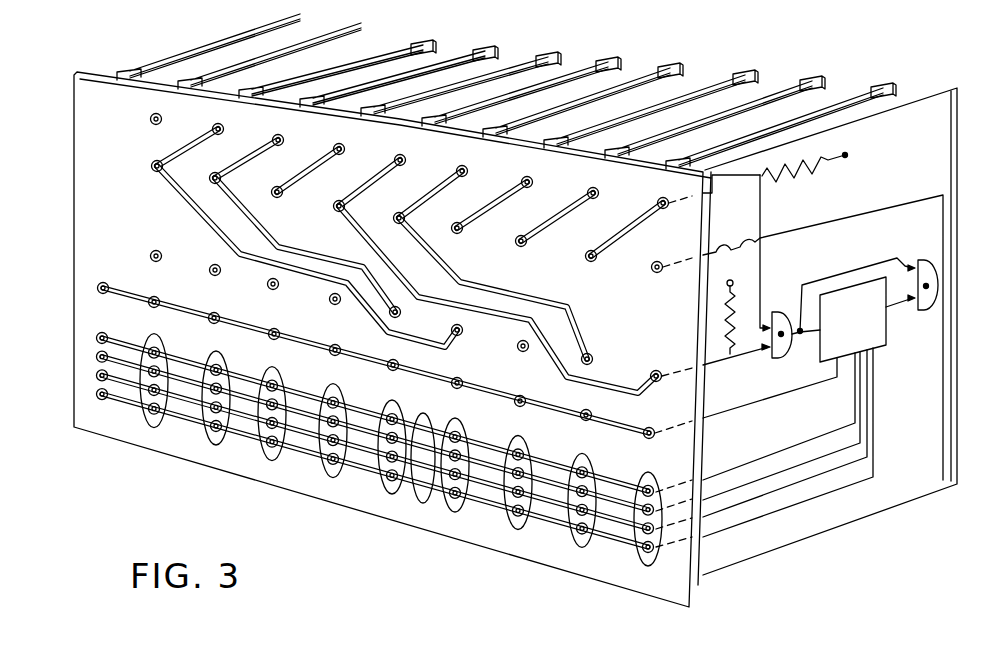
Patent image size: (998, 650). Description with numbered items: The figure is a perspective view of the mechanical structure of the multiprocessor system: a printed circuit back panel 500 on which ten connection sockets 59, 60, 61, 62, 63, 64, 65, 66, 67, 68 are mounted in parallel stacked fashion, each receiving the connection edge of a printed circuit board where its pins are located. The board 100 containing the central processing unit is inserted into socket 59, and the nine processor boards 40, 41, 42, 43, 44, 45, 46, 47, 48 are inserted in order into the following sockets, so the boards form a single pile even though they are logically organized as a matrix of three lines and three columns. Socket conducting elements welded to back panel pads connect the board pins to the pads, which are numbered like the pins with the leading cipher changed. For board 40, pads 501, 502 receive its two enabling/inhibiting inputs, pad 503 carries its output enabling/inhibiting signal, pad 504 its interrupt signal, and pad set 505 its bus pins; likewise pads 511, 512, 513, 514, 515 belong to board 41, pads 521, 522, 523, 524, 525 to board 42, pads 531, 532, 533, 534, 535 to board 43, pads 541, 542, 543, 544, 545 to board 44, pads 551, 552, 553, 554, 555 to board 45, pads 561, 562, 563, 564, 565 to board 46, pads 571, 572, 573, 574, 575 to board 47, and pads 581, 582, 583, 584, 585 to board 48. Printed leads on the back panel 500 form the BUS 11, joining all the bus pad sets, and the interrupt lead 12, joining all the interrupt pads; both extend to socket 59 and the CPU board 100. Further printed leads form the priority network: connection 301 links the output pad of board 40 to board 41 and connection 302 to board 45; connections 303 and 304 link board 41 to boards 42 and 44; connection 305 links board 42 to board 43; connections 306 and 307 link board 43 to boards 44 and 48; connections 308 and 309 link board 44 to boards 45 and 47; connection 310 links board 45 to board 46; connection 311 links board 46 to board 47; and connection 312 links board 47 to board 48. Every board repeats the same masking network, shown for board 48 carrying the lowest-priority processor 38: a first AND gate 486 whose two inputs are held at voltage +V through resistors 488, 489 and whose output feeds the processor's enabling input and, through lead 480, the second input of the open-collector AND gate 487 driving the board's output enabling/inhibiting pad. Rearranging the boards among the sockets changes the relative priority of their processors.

The BUS leads 11 is at (420, 503).
The interrupt lead 12 is at (370, 363).
The processor 38 is at (885, 348).
The board 40 is at (420, 40).
The board 41 is at (491, 46).
The board 42 is at (551, 53).
The board 43 is at (614, 58).
The board 44 is at (676, 64).
The board 45 is at (750, 71).
The board 46 is at (816, 78).
The board 47 is at (886, 84).
The board 48 is at (946, 90).
The connection socket 59 is at (122, 72).
The connection socket 60 is at (180, 80).
The connection socket 61 is at (243, 88).
The connection socket 62 is at (302, 98).
The connection socket 63 is at (360, 108).
The connection socket 64 is at (424, 120).
The connection socket 65 is at (485, 130).
The connection socket 66 is at (546, 141).
The connection socket 67 is at (607, 152).
The connection socket 68 is at (684, 140).
The CPU board 100 is at (203, 66).
The connection 301 is at (190, 147).
The connection 302 is at (186, 204).
The connection 303 is at (250, 158).
The connection 304 is at (247, 212).
The connection 305 is at (302, 166).
The connection 306 is at (352, 193).
The connection 307 is at (360, 233).
The connection 308 is at (433, 195).
The connection 309 is at (432, 252).
The connection 310 is at (492, 205).
The connection 311 is at (547, 222).
The connection 312 is at (618, 236).
The lead 480 is at (873, 265).
The first AND gate 486 is at (777, 360).
The second AND gate 487 is at (923, 312).
The resistor 488 is at (732, 292).
The resistor 489 is at (808, 172).
The back panel 500 is at (181, 458).
The pad 501 is at (152, 252).
The pad 502 is at (152, 114).
The pad 503 is at (151, 165).
The pad 504 is at (150, 296).
The pad set 505 is at (151, 345).
The pad 511 is at (211, 265).
The pad 512 is at (214, 124).
The pad 513 is at (209, 178).
The pad 514 is at (213, 312).
The pad set 515 is at (215, 362).
The pad 521 is at (267, 285).
The pad 522 is at (274, 135).
The pad 523 is at (271, 193).
The pad 524 is at (273, 328).
The pad set 525 is at (271, 379).
The pad 531 is at (329, 299).
The pad 532 is at (334, 144).
The pad 533 is at (333, 208).
The pad 534 is at (333, 344).
The pad set 535 is at (333, 396).
The pad 541 is at (402, 312).
The pad 542 is at (396, 155).
The pad 543 is at (393, 218).
The pad 544 is at (391, 359).
The pad set 545 is at (392, 412).
The pad 551 is at (457, 336).
The pad 552 is at (458, 166).
The pad 553 is at (451, 229).
The pad 554 is at (455, 377).
The pad set 555 is at (456, 430).
The pad 561 is at (517, 345).
The pad 562 is at (522, 177).
The pad 563 is at (515, 242).
The pad 564 is at (518, 396).
The pad set 565 is at (520, 448).
The pad 571 is at (590, 353).
The pad 572 is at (590, 188).
The pad 573 is at (585, 256).
The pad 574 is at (585, 409).
The pad set 575 is at (583, 466).
The pad 581 is at (656, 370).
The pad 582 is at (658, 200).
The pad 583 is at (651, 267).
The pad 584 is at (650, 427).
The pad set 585 is at (649, 485).